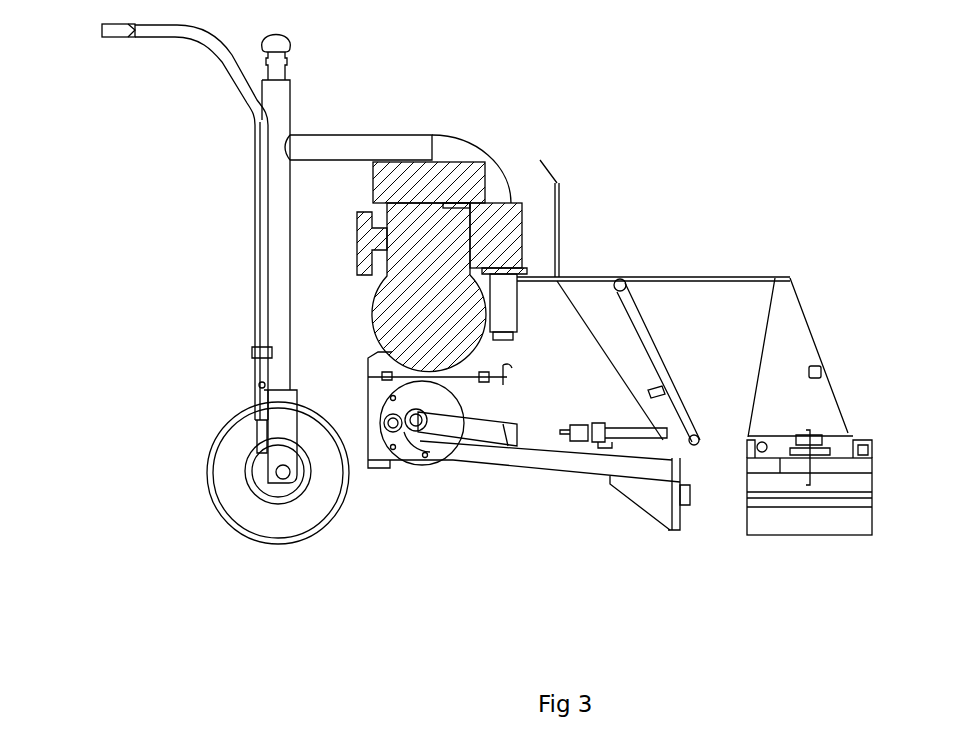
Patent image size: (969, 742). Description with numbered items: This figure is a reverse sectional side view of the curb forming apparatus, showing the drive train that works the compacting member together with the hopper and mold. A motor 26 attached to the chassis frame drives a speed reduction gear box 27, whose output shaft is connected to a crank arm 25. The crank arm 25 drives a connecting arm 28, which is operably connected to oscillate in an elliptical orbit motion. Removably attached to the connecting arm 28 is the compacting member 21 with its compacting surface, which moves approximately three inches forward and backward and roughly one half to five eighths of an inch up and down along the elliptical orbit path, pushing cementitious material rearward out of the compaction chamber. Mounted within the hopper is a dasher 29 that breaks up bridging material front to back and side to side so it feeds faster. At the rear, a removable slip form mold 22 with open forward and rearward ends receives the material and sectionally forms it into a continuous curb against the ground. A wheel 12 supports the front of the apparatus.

The wheel 12 is at (228, 467).
The compacting member 21 is at (688, 505).
The slip form mold 22 is at (837, 523).
The crank arm 25 is at (422, 452).
The motor 26 is at (372, 308).
The speed reduction gear box 27 is at (405, 452).
The connecting arm 28 is at (585, 468).
The dasher 29 is at (652, 342).